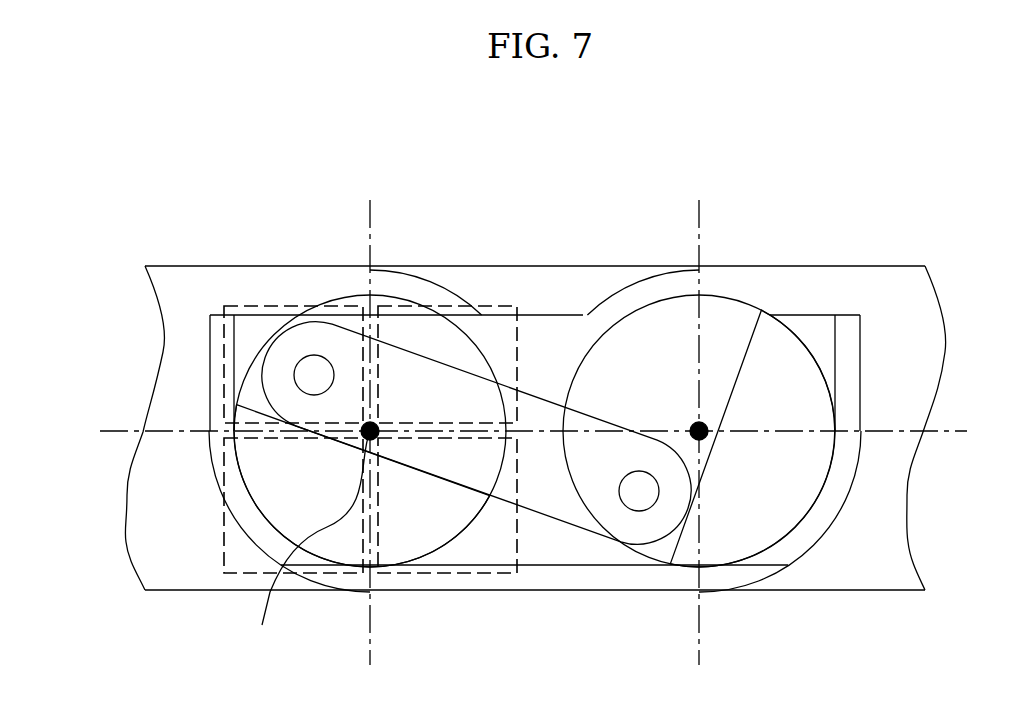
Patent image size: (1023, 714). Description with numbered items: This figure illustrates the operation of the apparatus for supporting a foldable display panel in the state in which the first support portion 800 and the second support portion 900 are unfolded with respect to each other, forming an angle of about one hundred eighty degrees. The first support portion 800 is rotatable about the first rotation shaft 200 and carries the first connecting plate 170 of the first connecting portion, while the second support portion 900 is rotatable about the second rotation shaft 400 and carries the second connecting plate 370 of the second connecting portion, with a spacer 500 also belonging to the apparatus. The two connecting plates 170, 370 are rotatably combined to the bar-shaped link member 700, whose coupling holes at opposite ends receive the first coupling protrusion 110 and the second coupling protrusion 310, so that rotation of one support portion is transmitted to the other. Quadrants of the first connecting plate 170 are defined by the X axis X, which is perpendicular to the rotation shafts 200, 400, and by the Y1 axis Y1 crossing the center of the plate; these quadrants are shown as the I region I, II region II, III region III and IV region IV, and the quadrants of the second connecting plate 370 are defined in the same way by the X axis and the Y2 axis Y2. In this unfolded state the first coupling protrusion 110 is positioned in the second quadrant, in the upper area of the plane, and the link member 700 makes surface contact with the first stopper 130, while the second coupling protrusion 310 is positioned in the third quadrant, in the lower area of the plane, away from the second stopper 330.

The first coupling protrusion 110 is at (314, 372).
The first stopper 130 is at (430, 527).
The first connecting plate 170 is at (413, 316).
The first rotation shaft 200 is at (309, 538).
The second coupling protrusion 310 is at (636, 495).
The second stopper 330 is at (787, 345).
The second connecting plate 370 is at (735, 314).
The second rotation shaft 400 is at (690, 422).
The spacer 500 is at (790, 552).
The link member 700 is at (562, 502).
The first support portion 800 is at (175, 283).
The second support portion 900 is at (885, 282).
The I region I is at (495, 302).
The II region II is at (224, 355).
The III region III is at (224, 531).
The IV region IV is at (488, 577).
The X axis X is at (542, 433).
The Y1 axis Y1 is at (370, 447).
The Y2 axis Y2 is at (700, 447).